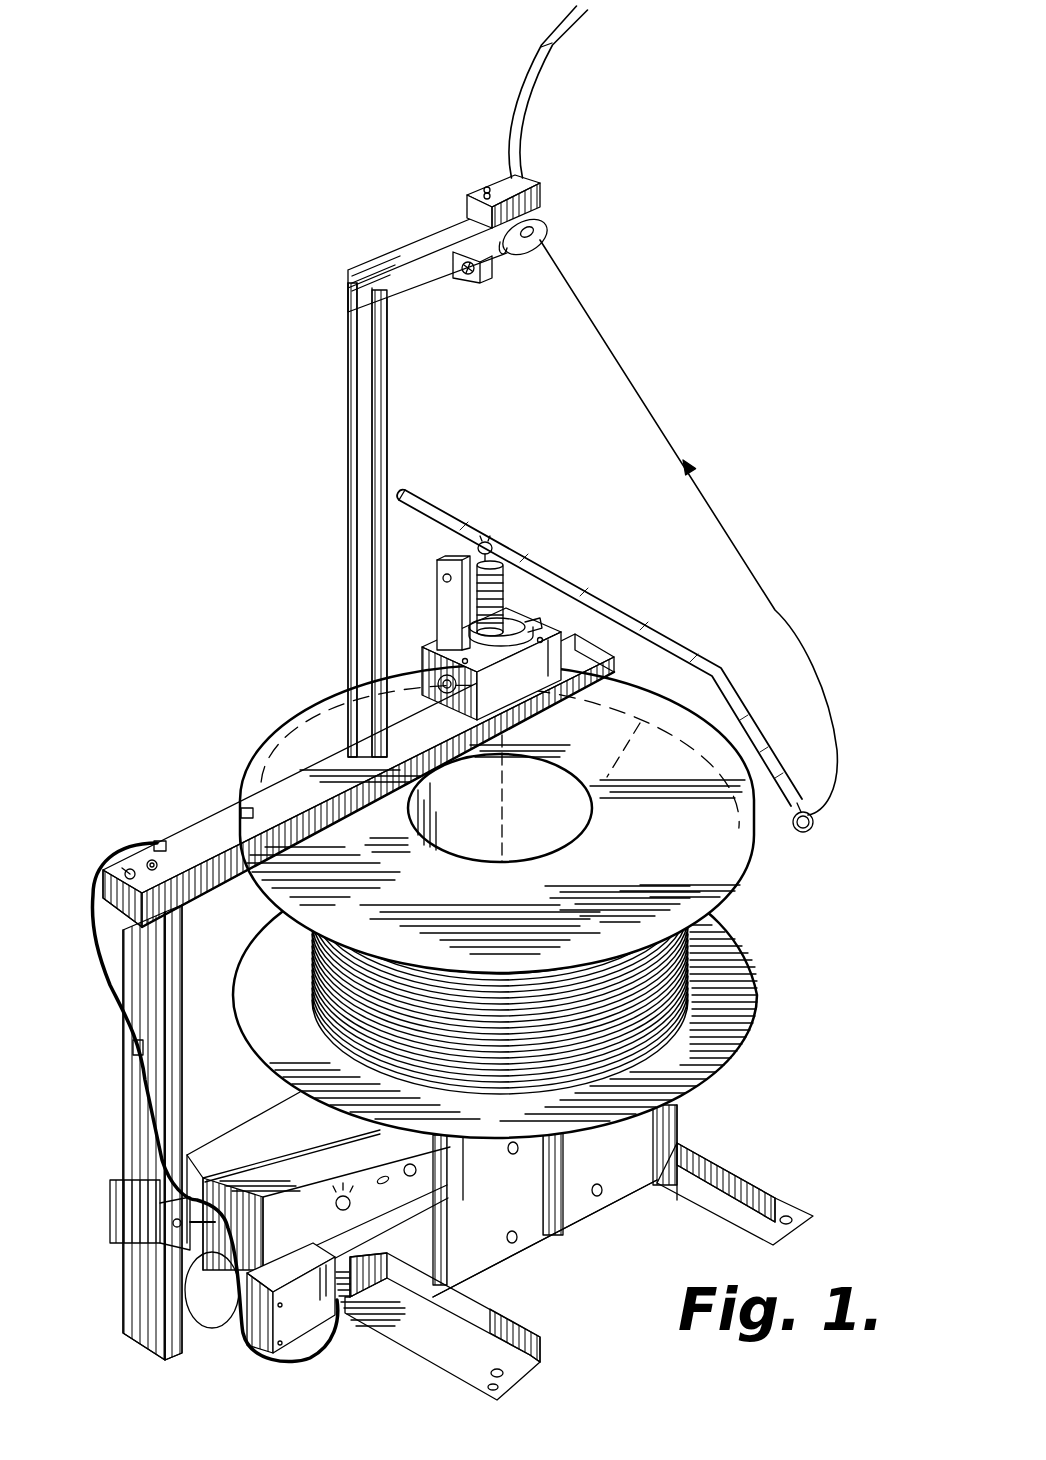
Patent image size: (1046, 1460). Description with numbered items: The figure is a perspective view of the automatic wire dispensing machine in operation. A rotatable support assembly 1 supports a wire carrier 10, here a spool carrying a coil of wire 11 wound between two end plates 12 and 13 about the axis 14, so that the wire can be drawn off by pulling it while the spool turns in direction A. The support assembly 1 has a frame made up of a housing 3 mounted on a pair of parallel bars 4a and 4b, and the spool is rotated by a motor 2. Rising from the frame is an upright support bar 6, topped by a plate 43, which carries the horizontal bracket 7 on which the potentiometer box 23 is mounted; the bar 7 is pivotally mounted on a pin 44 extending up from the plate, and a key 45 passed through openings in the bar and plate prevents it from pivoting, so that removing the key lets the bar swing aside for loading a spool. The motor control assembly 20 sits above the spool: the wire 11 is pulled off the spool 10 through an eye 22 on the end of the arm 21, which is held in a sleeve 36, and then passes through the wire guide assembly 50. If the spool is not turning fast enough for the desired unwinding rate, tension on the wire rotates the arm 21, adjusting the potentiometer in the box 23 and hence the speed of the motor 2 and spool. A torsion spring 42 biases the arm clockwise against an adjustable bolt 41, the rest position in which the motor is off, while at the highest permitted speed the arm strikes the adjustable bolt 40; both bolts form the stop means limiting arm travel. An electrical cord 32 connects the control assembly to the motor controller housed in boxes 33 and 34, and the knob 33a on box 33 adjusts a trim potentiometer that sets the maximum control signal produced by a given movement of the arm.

The rotatable support assembly 1 is at (745, 1093).
The motor 2 is at (207, 1318).
The housing 3 is at (625, 1163).
The parallel bar 4a is at (507, 1322).
The parallel bar 4b is at (742, 1192).
The upright support bar 6 is at (170, 1073).
The horizontal bracket 7 is at (222, 810).
The wire carrier 10 is at (776, 858).
The wire 11 is at (800, 617).
The end plate 12 is at (618, 698).
The end plate 13 is at (738, 1022).
The axis 14 is at (512, 728).
The motor control assembly 20 is at (540, 535).
The arm 21 is at (620, 618).
The eye 22 is at (815, 822).
The potentiometer box 23 is at (542, 622).
The electrical cord 32 is at (172, 845).
The box 33 is at (258, 1165).
The knob 33a is at (333, 1203).
The box 34 is at (310, 1320).
The sleeve 36 is at (493, 552).
The adjustable bolt 40 is at (446, 576).
The adjustable bolt 41 is at (483, 542).
The torsion spring 42 is at (516, 620).
The plate 43 is at (190, 906).
The pin 44 is at (152, 860).
The key 45 is at (130, 868).
The wire guide assembly 50 is at (555, 202).